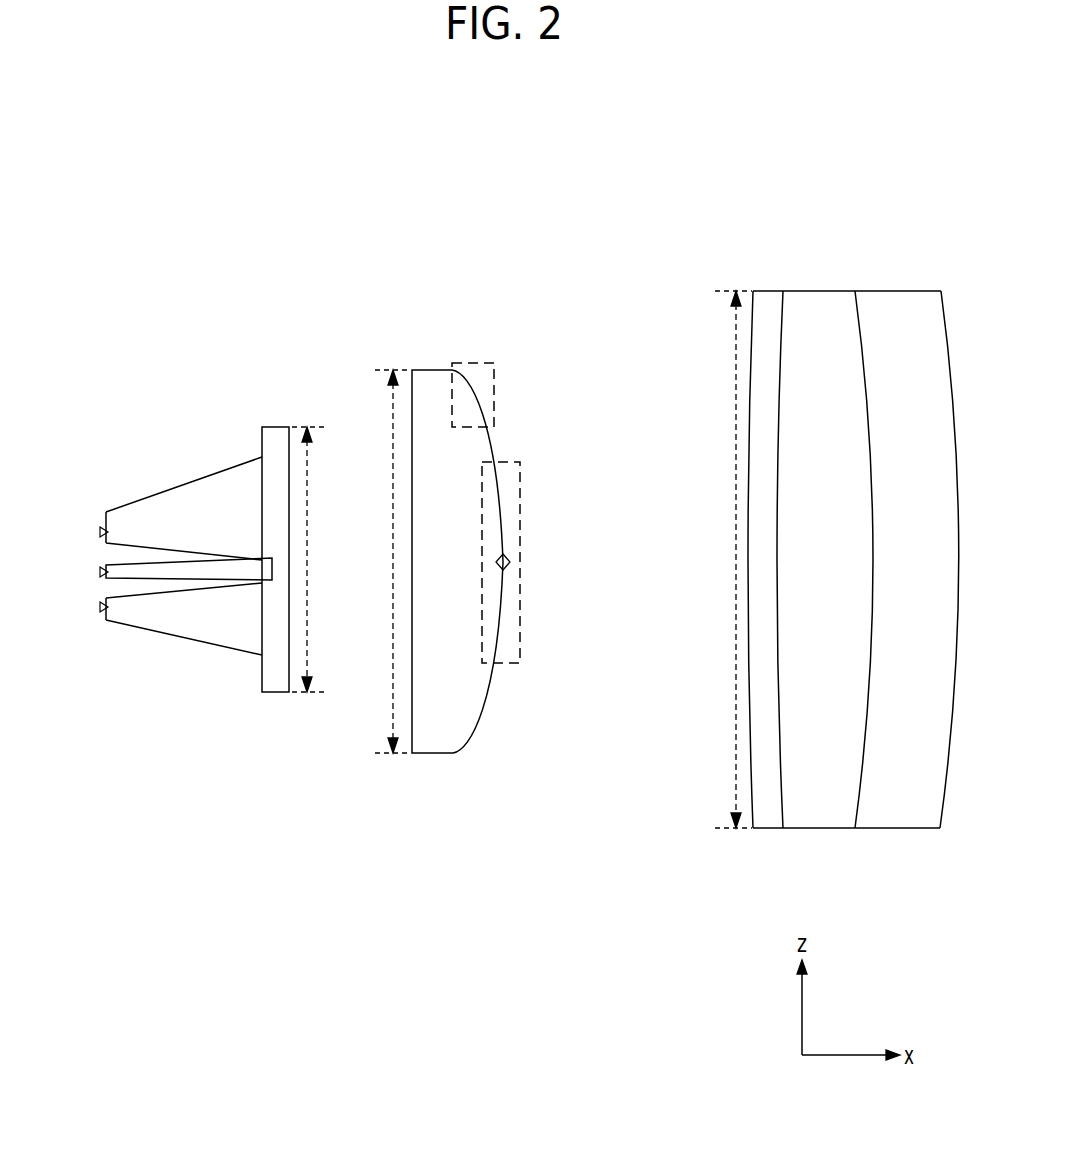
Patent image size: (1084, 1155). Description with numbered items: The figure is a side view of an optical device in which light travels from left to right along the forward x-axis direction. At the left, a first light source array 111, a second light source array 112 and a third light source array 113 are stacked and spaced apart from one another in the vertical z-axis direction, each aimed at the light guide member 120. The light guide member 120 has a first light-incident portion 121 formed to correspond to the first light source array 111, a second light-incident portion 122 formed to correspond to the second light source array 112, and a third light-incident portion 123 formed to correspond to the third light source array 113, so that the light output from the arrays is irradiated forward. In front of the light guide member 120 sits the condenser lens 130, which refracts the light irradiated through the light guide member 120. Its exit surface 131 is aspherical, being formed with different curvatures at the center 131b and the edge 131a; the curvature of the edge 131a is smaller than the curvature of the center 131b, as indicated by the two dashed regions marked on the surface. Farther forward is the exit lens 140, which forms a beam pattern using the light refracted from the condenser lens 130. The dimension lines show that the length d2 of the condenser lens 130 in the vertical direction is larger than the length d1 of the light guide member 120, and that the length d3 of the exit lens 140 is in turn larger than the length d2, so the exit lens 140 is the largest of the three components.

The first light source array 111 is at (99, 532).
The second light source array 112 is at (99, 572).
The third light source array 113 is at (99, 607).
The light guide member 120 is at (195, 544).
The first light-incident portion 121 is at (150, 515).
The second light-incident portion 122 is at (142, 573).
The third light-incident portion 123 is at (200, 626).
The condenser lens 130 is at (491, 510).
The exit surface 131 is at (487, 708).
The edge 131a is at (495, 395).
The center 131b is at (521, 515).
The exit lens 140 is at (777, 275).
The length of the light guide member d1 is at (313, 559).
The length of the condenser lens d2 is at (388, 561).
The length of the exit lens d3 is at (729, 559).